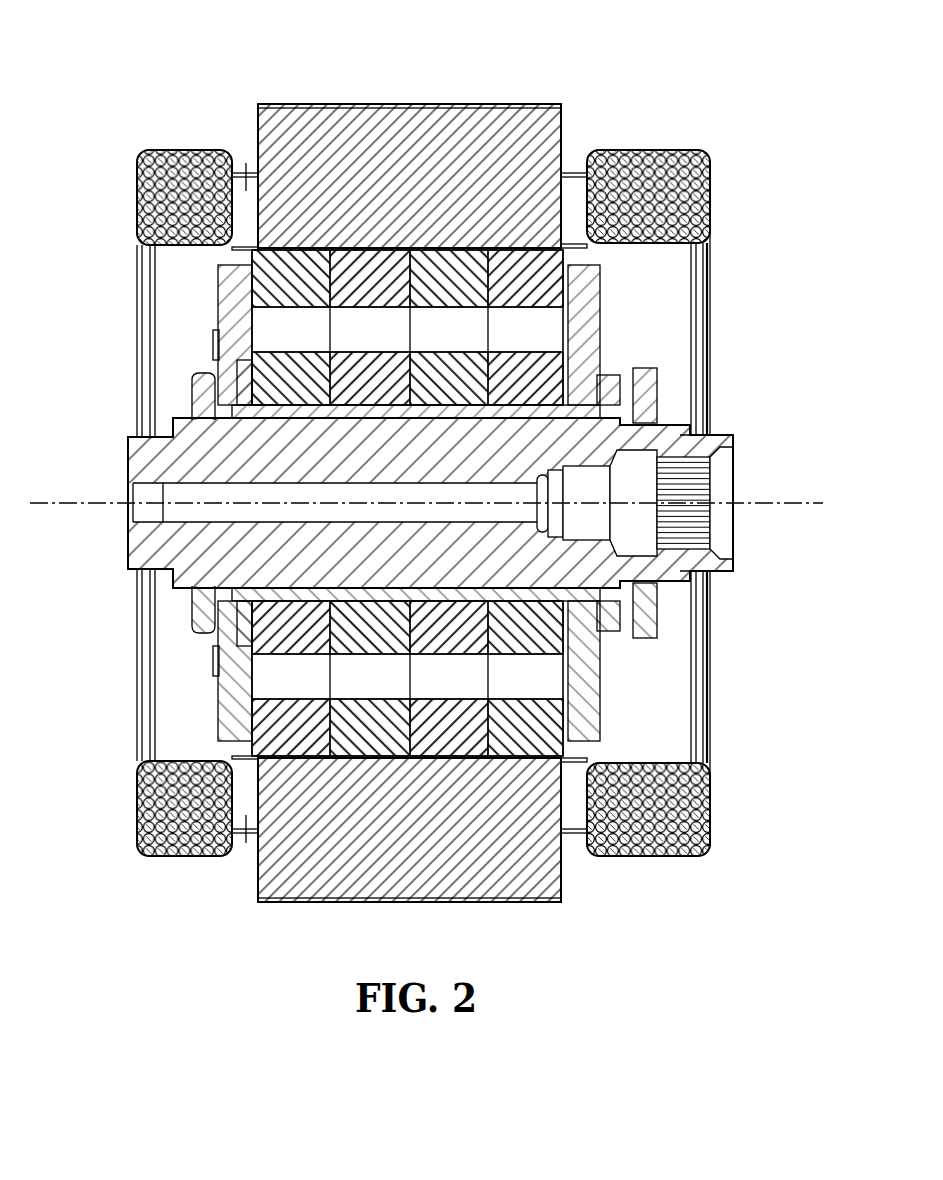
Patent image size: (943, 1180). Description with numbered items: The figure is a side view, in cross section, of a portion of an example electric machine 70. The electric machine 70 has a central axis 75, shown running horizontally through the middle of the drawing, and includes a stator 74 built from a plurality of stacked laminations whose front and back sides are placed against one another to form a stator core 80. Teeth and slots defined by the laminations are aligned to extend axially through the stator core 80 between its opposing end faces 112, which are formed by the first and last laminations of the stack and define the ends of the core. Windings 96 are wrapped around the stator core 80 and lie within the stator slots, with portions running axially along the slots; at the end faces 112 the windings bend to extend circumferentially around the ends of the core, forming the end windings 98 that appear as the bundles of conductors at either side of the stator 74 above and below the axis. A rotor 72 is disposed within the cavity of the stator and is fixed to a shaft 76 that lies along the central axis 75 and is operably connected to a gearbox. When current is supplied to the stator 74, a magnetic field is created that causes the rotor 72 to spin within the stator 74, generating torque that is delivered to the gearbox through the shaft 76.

The electric machine 70 is at (216, 62).
The rotor 72 is at (525, 278).
The stator 74 is at (333, 103).
The central axis 75 is at (765, 503).
The shaft 76 is at (720, 437).
The stator core 80 is at (440, 103).
The windings 96 is at (246, 815).
The end windings 98 is at (690, 160).
The end faces 112 is at (256, 140).